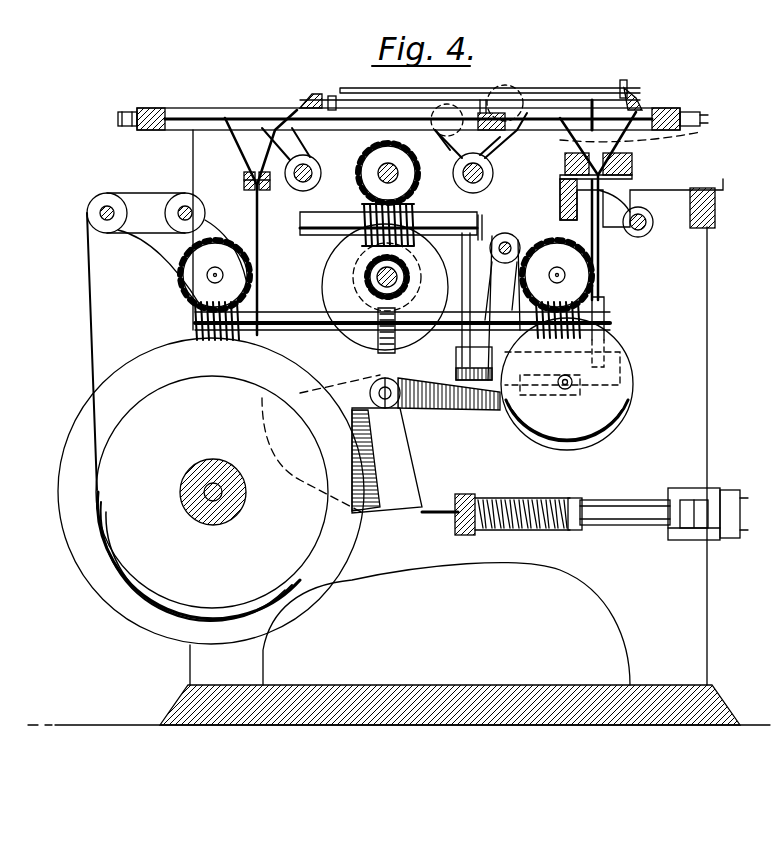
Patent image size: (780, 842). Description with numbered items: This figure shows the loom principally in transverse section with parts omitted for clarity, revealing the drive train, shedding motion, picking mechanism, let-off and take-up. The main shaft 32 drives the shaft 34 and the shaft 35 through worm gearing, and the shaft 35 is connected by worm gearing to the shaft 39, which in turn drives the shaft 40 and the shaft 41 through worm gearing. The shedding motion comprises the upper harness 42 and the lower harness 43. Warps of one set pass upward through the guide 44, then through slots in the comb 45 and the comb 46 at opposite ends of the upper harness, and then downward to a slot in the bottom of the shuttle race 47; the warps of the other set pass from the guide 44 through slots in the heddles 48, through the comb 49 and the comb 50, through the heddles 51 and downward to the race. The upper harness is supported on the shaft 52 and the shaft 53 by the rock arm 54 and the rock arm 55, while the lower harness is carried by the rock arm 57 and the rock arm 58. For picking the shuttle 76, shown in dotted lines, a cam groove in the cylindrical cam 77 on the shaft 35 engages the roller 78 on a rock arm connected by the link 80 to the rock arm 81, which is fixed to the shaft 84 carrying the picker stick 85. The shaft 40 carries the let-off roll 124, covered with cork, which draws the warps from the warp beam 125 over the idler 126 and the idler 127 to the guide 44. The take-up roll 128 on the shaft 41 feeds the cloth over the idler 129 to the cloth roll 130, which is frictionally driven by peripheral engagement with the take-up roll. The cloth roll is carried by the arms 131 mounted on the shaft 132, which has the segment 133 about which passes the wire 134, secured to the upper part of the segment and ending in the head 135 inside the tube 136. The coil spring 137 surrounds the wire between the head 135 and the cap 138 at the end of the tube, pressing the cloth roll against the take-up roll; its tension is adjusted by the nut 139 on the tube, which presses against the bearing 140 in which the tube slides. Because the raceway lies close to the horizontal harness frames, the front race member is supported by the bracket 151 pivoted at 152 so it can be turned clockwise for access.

The heddles 48 is at (205, 108).
The comb 45 is at (312, 92).
The comb 49 is at (335, 96).
The comb 50 is at (497, 94).
The heddles 51 is at (594, 100).
The comb 46 is at (628, 82).
The upper harness 42 is at (642, 104).
The lower harness 43 is at (700, 118).
The shuttle 76 is at (646, 129).
The shuttle race 47 is at (632, 164).
The bracket 151 is at (650, 186).
The pivot 152 is at (642, 232).
The rock arm 54 is at (372, 160).
The shaft 34 is at (395, 166).
The rock arm 58 is at (452, 160).
The rock arm 55 is at (505, 146).
The shaft 53 is at (493, 172).
The main shaft 32 is at (460, 215).
The link 80 is at (500, 236).
The take-up roll 128 is at (521, 227).
The idler 129 is at (508, 291).
The shaft 41 is at (566, 276).
The picker stick 85 is at (606, 310).
The cloth roll 130 is at (632, 392).
The guide 44 is at (244, 178).
The shaft 52 is at (312, 180).
The rock arm 57 is at (261, 222).
The idler 126 is at (100, 196).
The idler 127 is at (172, 200).
The let-off roll 124 is at (222, 240).
The shaft 40 is at (207, 276).
The shaft 35 is at (378, 275).
The roller 78 is at (420, 275).
The rock arm 81 is at (462, 296).
The cylindrical cam 77 is at (322, 294).
The shaft 39 is at (316, 333).
The shaft 132 is at (382, 382).
The shaft 84 is at (456, 364).
The arms 131 is at (440, 405).
The warp beam 125 is at (70, 440).
The segment 133 is at (405, 470).
The cap 138 is at (452, 498).
The wire 134 is at (430, 518).
The coil spring 137 is at (512, 532).
The head 135 is at (574, 532).
The tube 136 is at (612, 500).
The bearing 140 is at (715, 488).
The nut 139 is at (738, 490).